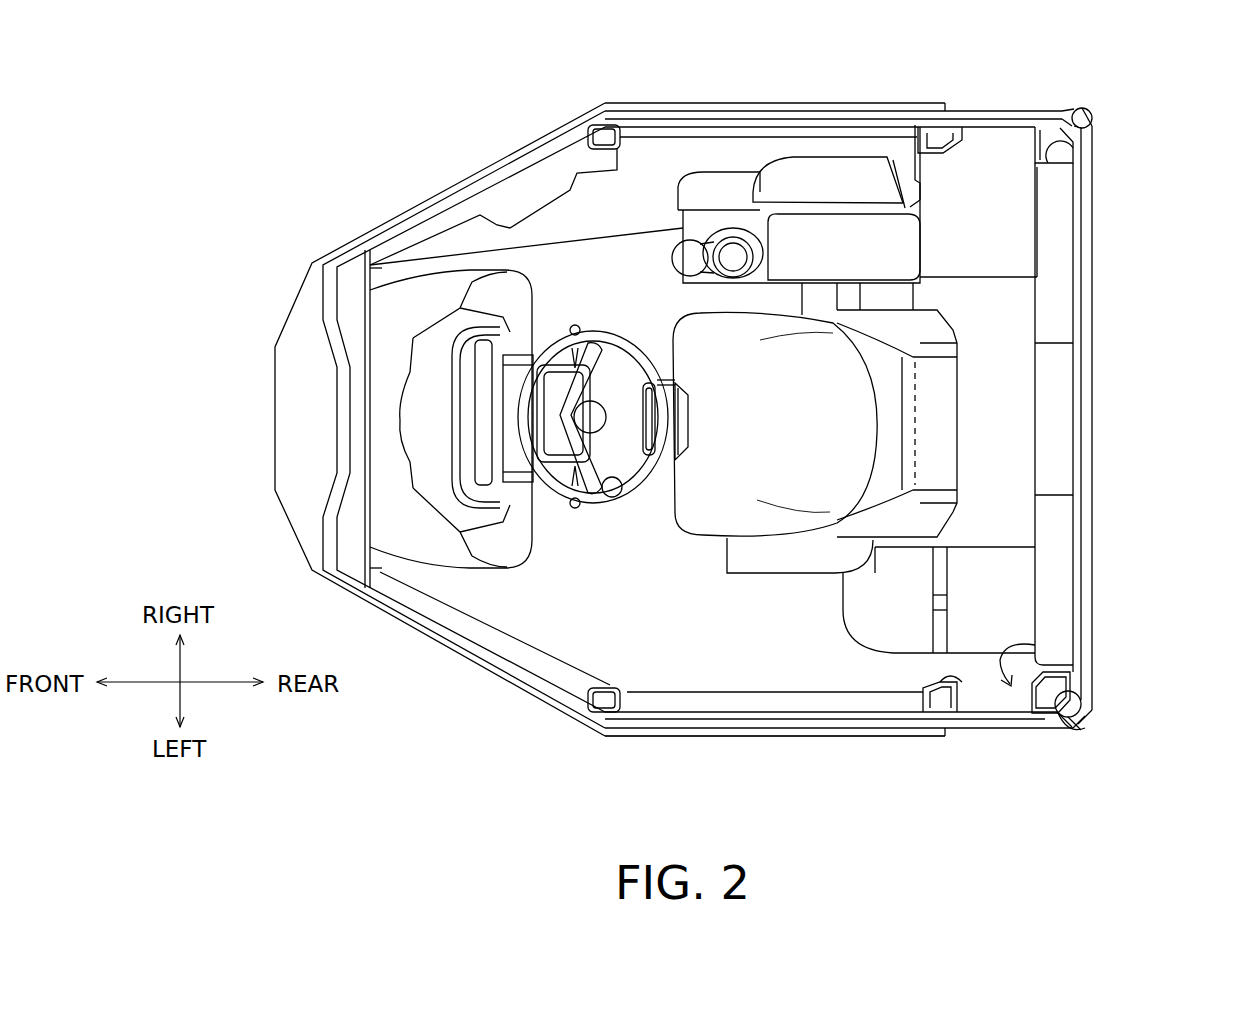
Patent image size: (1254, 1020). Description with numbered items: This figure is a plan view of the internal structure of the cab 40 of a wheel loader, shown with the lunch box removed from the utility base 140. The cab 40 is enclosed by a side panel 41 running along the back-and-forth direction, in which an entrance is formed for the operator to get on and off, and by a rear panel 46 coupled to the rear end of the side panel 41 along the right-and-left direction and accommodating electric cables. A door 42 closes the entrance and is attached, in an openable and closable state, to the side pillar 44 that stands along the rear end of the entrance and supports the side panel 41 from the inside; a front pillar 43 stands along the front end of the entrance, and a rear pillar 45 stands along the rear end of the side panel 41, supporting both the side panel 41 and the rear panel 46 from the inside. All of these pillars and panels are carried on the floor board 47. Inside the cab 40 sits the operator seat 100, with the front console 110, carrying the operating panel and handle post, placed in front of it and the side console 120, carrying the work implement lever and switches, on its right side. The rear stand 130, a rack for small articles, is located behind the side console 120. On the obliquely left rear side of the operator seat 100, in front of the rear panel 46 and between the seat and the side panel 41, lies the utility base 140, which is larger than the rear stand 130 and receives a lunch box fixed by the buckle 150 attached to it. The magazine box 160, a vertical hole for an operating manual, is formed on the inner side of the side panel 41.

The cab 40 is at (1130, 102).
The side panel 41 is at (1033, 720).
The door 42 is at (900, 737).
The front pillar 43 is at (590, 705).
The side pillar 44 is at (970, 697).
The rear pillar 45 is at (1098, 720).
The rear panel 46 is at (1058, 515).
The floor board 47 is at (627, 617).
The operator seat 100 is at (827, 417).
The front console 110 is at (413, 307).
The side console 120 is at (813, 242).
The rear stand 130 is at (978, 170).
The utility base 140 is at (1000, 605).
The buckle 150 is at (940, 568).
The magazine box 160 is at (1037, 645).